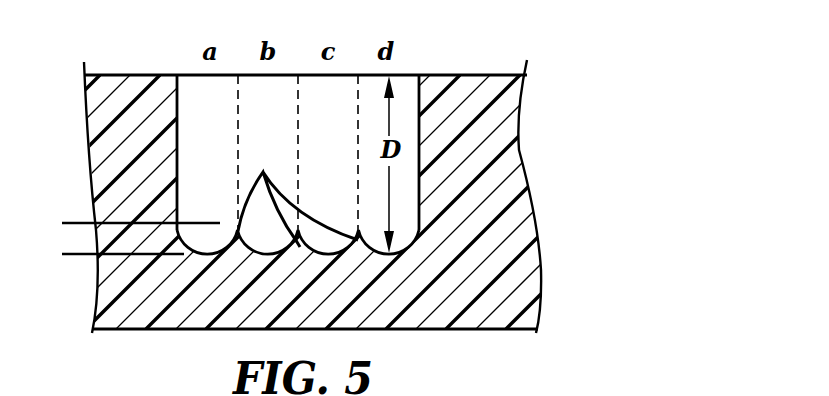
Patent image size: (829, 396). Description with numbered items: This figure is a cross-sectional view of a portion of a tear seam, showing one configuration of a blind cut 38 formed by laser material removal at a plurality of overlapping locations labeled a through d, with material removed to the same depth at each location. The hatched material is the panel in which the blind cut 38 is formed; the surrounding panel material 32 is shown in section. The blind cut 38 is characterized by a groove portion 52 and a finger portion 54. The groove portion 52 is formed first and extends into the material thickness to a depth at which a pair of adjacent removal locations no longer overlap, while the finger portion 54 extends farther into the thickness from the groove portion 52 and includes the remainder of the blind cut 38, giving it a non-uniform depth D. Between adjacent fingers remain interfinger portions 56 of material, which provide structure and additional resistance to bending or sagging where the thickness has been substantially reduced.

The substrate body 32 is at (122, 81).
The blind cut 38 is at (404, 118).
The groove portion 52 is at (70, 75).
The finger portion 54 is at (70, 223).
The interfinger portion 56 is at (298, 193).